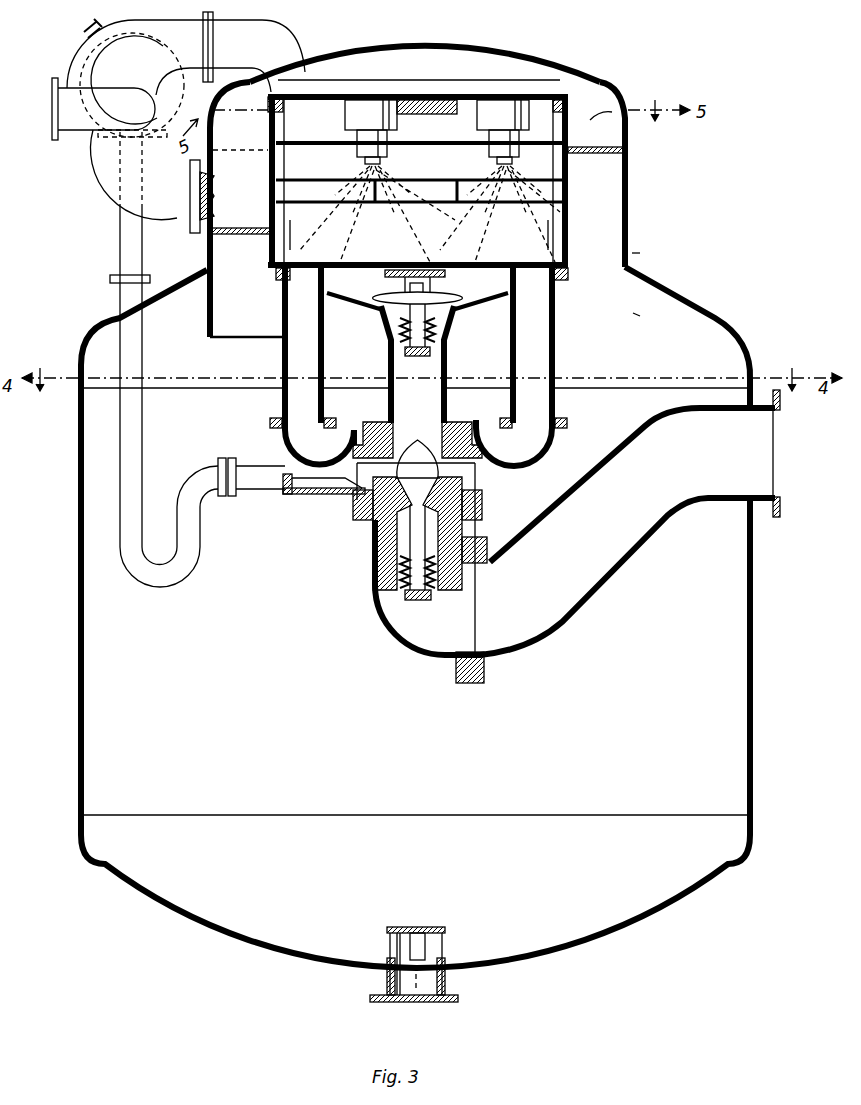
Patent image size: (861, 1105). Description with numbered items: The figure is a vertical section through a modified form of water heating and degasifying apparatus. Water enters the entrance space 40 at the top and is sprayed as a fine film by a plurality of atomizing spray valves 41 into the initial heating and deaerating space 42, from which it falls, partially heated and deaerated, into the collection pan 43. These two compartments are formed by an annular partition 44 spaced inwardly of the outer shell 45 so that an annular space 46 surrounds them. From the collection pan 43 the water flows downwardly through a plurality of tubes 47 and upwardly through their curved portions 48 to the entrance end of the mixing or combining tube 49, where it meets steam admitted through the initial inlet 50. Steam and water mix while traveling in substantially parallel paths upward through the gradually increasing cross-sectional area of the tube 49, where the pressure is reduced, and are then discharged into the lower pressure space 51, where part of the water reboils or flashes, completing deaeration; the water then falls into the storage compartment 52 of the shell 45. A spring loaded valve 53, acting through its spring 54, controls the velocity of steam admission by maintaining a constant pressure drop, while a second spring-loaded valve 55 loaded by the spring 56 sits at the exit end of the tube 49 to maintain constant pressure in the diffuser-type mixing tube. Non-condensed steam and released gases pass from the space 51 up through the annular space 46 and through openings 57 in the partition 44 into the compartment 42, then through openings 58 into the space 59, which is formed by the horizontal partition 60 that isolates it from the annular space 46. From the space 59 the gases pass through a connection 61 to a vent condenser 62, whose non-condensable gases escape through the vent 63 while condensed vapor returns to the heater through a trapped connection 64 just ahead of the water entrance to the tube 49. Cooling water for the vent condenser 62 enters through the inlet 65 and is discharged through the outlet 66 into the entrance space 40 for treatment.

The entrance space 40 is at (430, 70).
The atomizing spray valves 41 is at (478, 120).
The initial heating and deaerating space 42 is at (560, 165).
The collection pan 43 is at (550, 248).
The annular partition 44 is at (568, 222).
The outer wall or shell 45 is at (636, 258).
The annular space 46 is at (640, 253).
The tubes 47 is at (433, 287).
The curved portions 48 is at (300, 447).
The mixing or combining tube 49 is at (447, 377).
The initial inlet 50 is at (705, 483).
The space 51 is at (633, 313).
The storage compartment 52 is at (707, 750).
The spring loaded valve 53 is at (413, 493).
The spring 54 is at (403, 570).
The second spring-loaded valve 55 is at (368, 315).
The spring 56 is at (405, 337).
The openings 57 is at (443, 207).
The openings 58 is at (442, 108).
The space 59 is at (590, 120).
The horizontal partition 60 is at (240, 236).
The connection 61 is at (130, 183).
The vent condenser 62 is at (80, 66).
The vent 63 is at (86, 36).
The trapped connection 64 is at (123, 362).
The inlet 65 is at (75, 122).
The outlet 66 is at (272, 46).